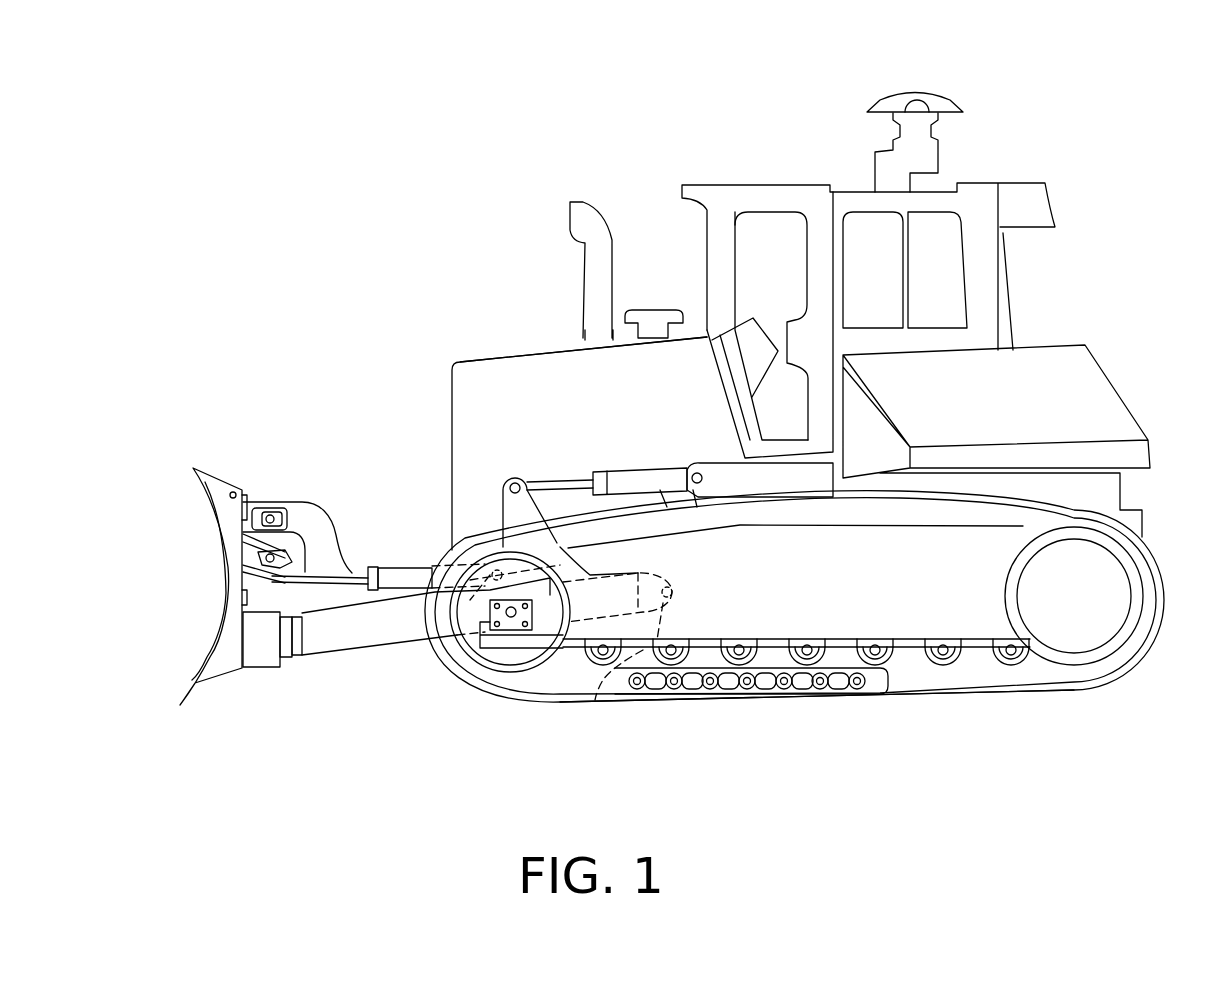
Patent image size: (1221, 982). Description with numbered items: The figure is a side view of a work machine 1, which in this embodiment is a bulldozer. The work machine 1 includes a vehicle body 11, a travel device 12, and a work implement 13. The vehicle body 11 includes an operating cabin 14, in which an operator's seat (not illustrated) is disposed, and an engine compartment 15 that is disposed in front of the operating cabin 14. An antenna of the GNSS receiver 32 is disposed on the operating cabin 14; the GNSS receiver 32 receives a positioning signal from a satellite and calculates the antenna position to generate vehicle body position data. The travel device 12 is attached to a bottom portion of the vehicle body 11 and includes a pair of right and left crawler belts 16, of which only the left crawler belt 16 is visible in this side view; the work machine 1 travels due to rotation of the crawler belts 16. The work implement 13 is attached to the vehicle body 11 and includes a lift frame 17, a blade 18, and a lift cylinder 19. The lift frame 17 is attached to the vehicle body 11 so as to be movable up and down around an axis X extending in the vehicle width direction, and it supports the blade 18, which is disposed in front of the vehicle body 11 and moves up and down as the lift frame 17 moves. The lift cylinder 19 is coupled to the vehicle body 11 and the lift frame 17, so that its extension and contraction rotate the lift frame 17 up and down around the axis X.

The work machine 1 is at (248, 172).
The vehicle body 11 is at (533, 268).
The travel device 12 is at (1060, 704).
The work implement 13 is at (318, 442).
The operating cabin 14 is at (723, 193).
The engine compartment 15 is at (653, 370).
The crawler belt 16 is at (923, 697).
The lift frame 17 is at (382, 640).
The blade 18 is at (227, 533).
The lift cylinder 19 is at (630, 477).
The GNSS receiver 32 is at (900, 95).
The axis X is at (595, 700).